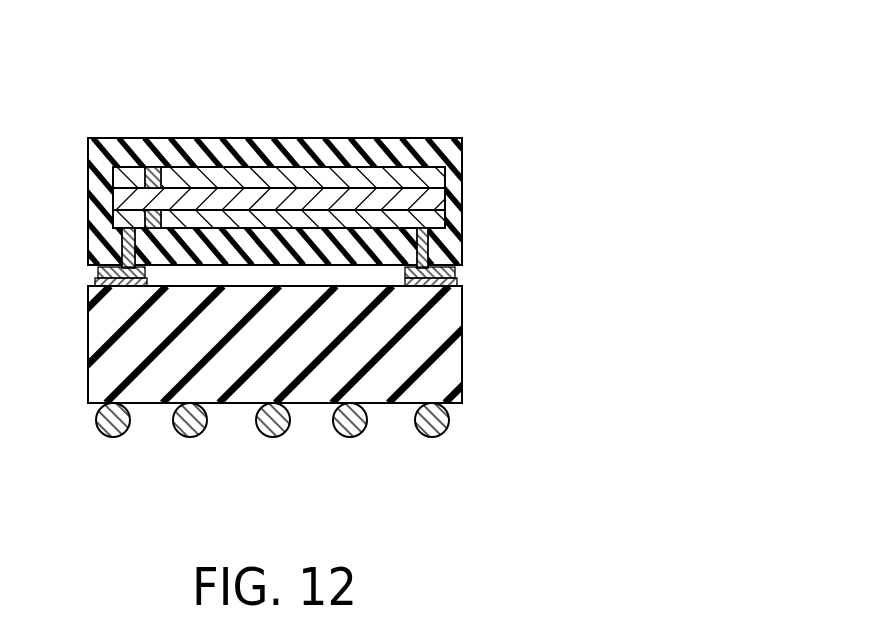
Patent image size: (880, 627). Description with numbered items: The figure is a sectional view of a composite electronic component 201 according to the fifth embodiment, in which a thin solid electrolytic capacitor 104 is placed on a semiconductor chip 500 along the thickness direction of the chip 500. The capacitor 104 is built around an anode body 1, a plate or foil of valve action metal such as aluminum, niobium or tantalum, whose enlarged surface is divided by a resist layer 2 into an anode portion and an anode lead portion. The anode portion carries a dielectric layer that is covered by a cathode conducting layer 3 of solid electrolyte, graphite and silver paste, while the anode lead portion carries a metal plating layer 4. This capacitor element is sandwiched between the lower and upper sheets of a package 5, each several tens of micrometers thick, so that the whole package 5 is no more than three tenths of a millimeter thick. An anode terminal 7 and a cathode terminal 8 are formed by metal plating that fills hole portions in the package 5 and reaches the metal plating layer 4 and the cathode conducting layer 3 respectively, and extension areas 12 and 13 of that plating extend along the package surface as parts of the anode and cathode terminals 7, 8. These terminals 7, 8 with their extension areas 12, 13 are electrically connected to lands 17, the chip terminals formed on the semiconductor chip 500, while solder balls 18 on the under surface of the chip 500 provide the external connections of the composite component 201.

The anode body 1 is at (218, 188).
The resist layer 2 is at (157, 186).
The cathode conducting layer 3 is at (329, 172).
The metal plating layer 4 is at (133, 172).
The package 5 is at (462, 152).
The anode terminal 7 is at (122, 243).
The cathode terminal 8 is at (430, 240).
The extension area 12 is at (96, 271).
The extension area 13 is at (456, 272).
The land 17 is at (93, 286).
The solder ball 18 is at (110, 437).
The solid electrolytic capacitor 104 is at (280, 138).
The composite electronic component 201 is at (380, 121).
The semiconductor chip 500 is at (388, 368).